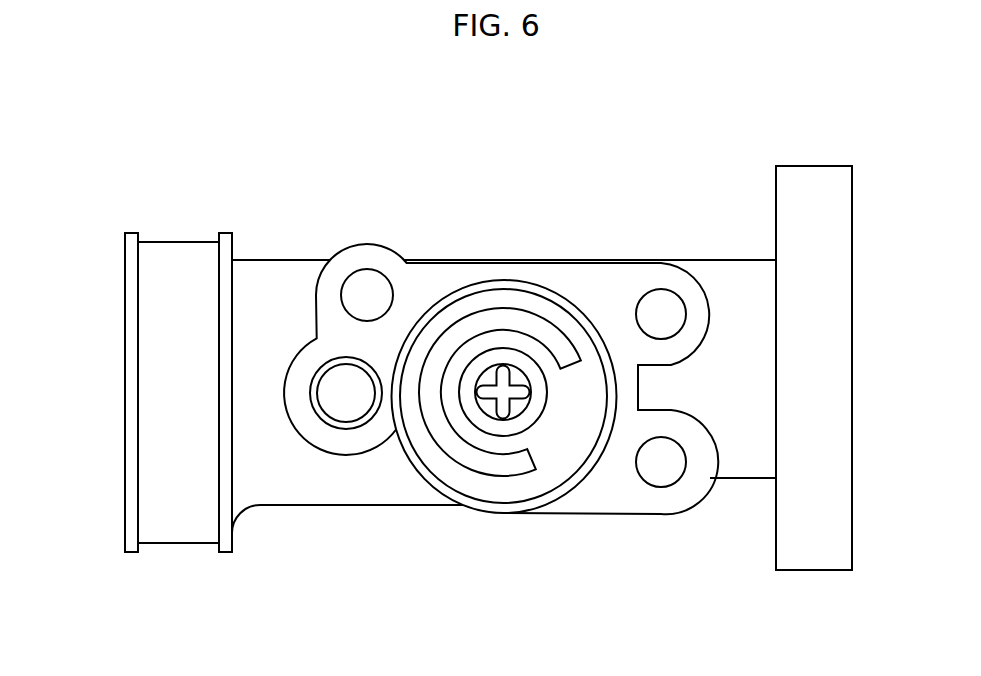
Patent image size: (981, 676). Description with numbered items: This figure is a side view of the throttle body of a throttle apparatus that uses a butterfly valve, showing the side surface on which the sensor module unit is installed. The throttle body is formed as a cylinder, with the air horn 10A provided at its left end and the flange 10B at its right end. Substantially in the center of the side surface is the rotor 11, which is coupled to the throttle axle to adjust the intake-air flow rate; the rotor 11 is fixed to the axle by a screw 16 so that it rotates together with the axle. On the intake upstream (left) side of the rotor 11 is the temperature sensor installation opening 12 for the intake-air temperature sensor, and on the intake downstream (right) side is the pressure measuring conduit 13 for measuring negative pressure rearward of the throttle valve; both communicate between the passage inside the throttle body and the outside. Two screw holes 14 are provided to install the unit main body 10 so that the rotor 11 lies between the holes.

The unit main body 10 is at (377, 507).
The air horn 10A is at (125, 437).
The flange 10B is at (852, 365).
The rotor 11 is at (496, 480).
The temperature sensor installation opening 12 is at (333, 429).
The pressure measuring conduit 13 is at (660, 289).
The screw holes 14 is at (367, 269).
The screw 16 is at (504, 364).